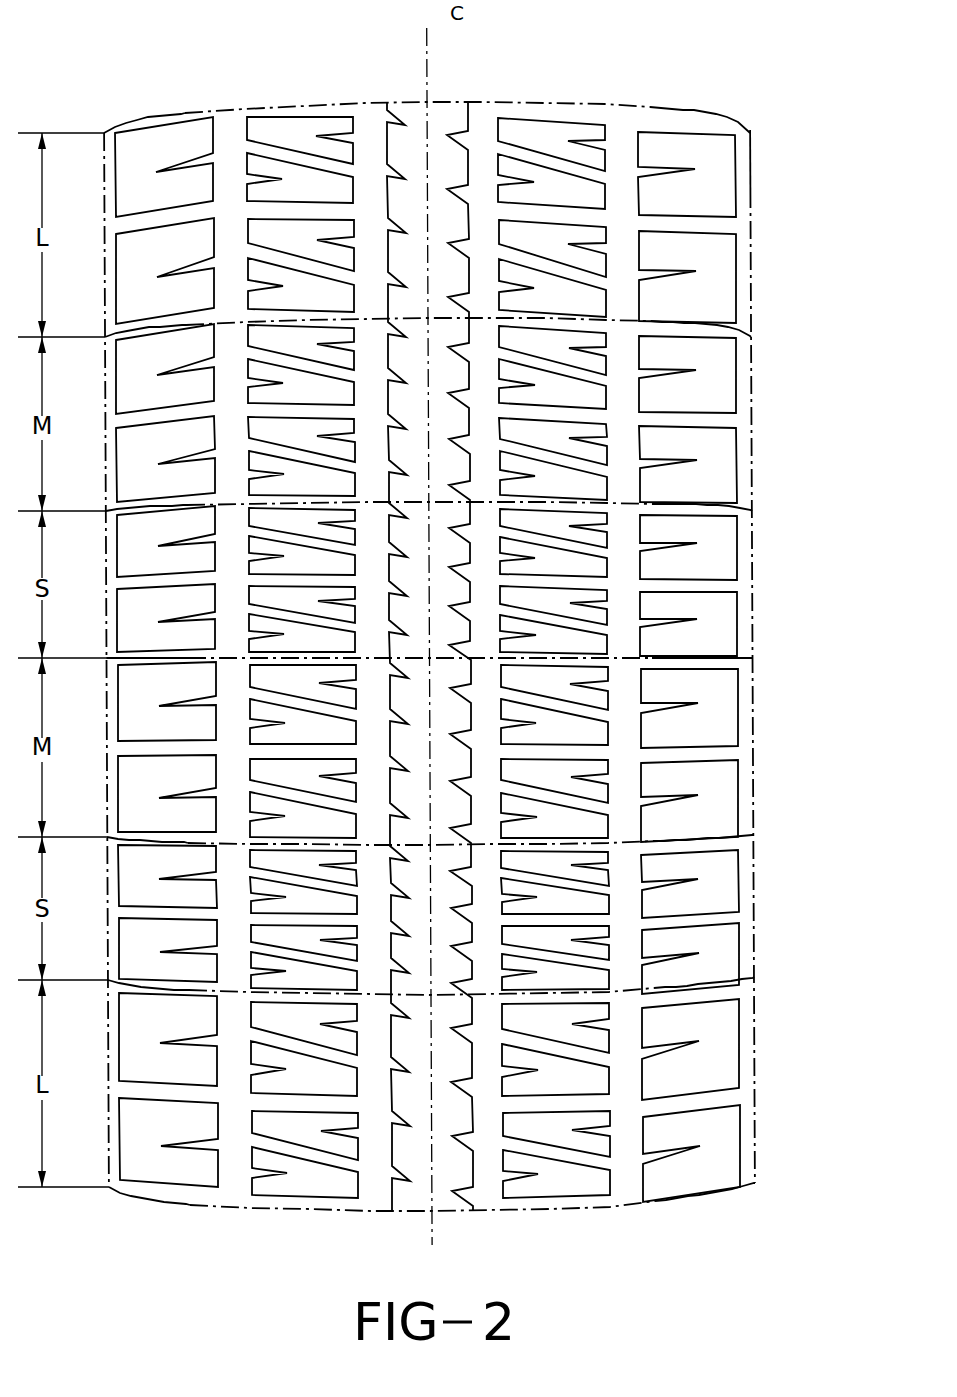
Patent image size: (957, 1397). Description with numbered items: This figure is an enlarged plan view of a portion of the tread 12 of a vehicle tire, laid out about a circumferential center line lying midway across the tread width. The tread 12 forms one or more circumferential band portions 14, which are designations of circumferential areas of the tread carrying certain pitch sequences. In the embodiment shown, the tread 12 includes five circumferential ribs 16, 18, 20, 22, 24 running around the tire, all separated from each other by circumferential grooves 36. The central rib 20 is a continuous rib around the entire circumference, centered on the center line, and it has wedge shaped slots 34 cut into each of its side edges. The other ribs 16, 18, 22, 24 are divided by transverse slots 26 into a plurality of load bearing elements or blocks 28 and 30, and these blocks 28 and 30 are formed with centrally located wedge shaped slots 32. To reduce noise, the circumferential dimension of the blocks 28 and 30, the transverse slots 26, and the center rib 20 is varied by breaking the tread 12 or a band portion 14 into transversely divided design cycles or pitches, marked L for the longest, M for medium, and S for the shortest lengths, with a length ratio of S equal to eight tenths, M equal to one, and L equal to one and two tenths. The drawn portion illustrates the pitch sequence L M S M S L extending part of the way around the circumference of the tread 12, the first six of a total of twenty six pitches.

The tread 12 is at (123, 114).
The circumferential band portion 14 is at (653, 112).
The circumferential rib 16 is at (187, 142).
The circumferential rib 18 is at (303, 133).
The central rib 20 is at (396, 150).
The circumferential rib 22 is at (556, 132).
The circumferential rib 24 is at (702, 146).
The transverse slots 26 is at (683, 330).
The blocks 28 is at (580, 563).
The blocks 30 is at (713, 786).
The wedge shaped slots 32 is at (665, 464).
The slots 34 is at (462, 1190).
The circumferential grooves 36 is at (373, 1190).